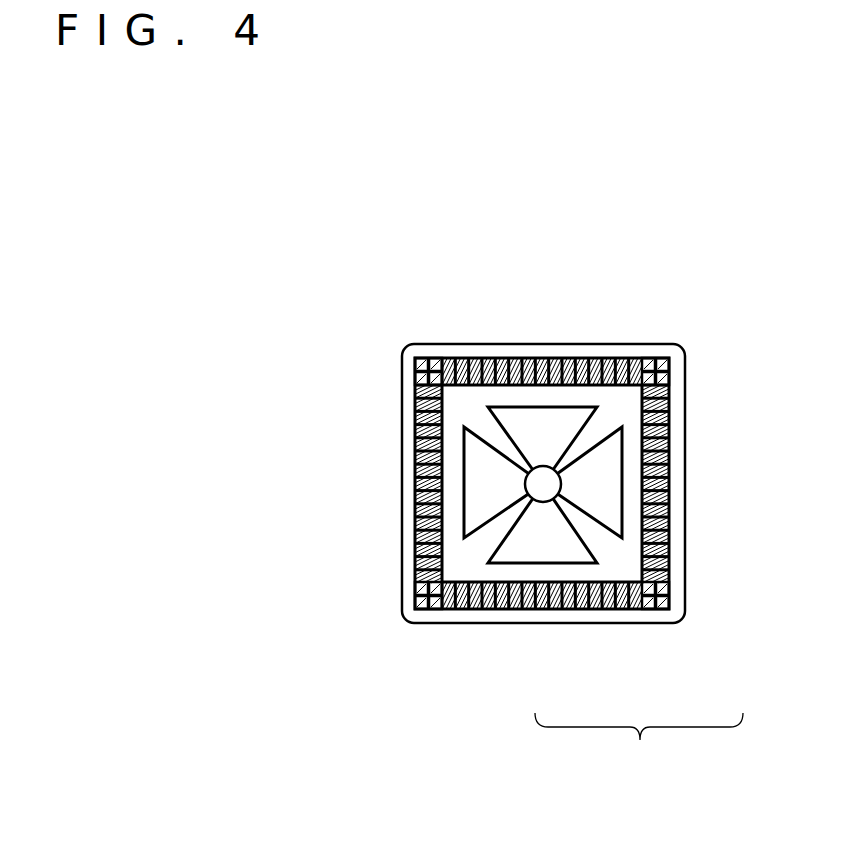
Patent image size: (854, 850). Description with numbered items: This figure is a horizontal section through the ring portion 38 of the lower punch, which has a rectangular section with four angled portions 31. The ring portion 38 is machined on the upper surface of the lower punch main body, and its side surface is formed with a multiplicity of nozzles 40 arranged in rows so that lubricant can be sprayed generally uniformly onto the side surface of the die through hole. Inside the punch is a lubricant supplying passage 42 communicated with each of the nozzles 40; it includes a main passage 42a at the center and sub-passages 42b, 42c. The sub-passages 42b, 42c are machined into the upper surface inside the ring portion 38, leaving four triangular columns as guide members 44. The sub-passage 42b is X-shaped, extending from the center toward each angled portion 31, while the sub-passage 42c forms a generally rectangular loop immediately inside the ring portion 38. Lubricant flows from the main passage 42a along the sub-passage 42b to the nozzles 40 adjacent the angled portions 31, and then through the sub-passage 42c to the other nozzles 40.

The angled portions 31 is at (404, 352).
The ring portion 38 is at (419, 398).
The nozzles 40 is at (497, 372).
The guide members 44 is at (596, 470).
The lubricant supplying passage 42 is at (639, 754).
The main passage 42a is at (550, 492).
The sub-passage 42b is at (583, 527).
The sub-passage 42c is at (630, 490).